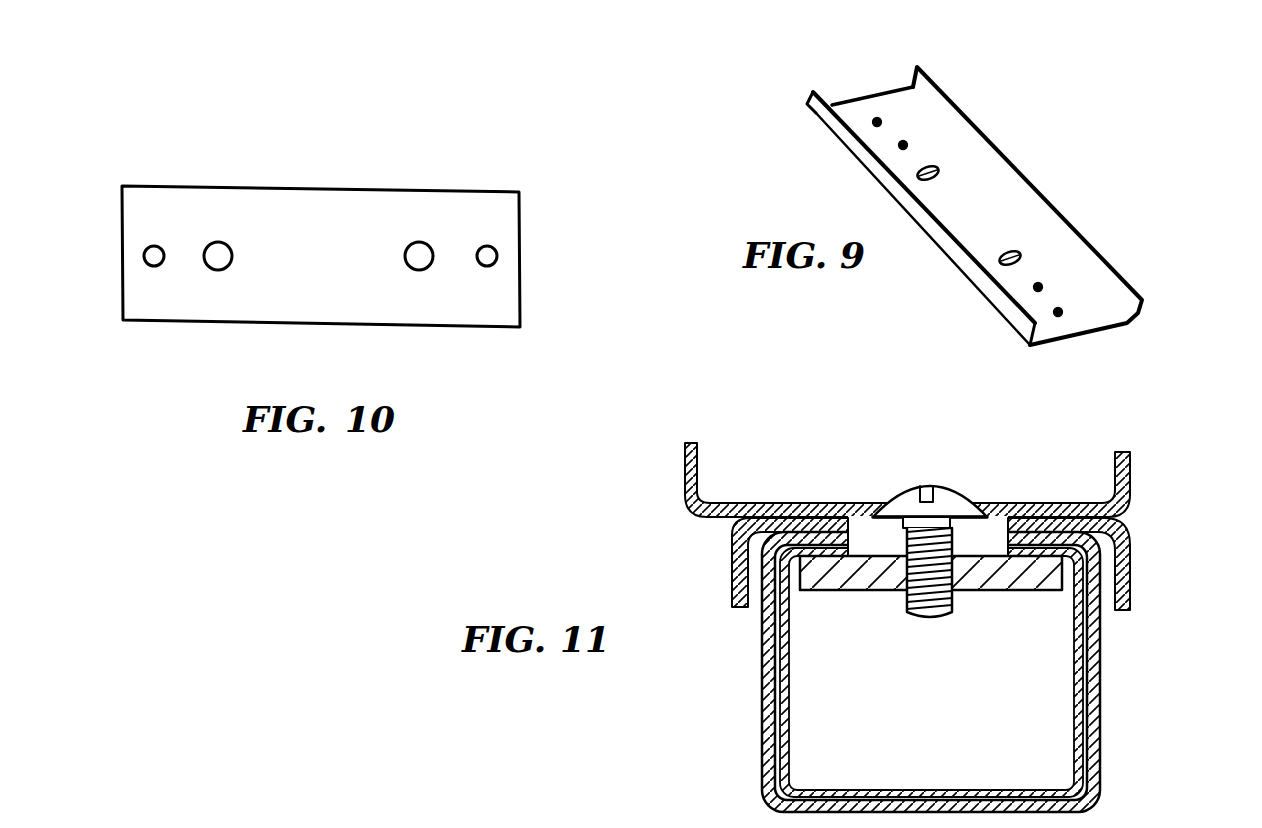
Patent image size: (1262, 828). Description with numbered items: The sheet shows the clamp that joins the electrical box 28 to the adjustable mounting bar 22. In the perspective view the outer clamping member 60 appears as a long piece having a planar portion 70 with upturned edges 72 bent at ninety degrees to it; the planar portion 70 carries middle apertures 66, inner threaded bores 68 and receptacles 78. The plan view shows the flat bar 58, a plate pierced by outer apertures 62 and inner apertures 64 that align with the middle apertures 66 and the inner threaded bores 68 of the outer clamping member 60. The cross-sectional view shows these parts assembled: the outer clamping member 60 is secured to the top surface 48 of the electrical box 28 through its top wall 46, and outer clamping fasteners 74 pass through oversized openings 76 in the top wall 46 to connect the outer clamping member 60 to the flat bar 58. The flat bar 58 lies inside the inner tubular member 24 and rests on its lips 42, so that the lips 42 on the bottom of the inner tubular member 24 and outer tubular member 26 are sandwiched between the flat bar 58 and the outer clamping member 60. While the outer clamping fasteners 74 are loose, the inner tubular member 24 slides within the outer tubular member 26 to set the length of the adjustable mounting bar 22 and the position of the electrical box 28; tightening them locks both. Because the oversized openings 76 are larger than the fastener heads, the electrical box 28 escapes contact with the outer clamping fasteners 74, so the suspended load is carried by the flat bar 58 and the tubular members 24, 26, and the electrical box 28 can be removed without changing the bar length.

In FIG. 11, the adjustable mounting bar 22 is at (954, 602).
In FIG. 11, the inner tubular member 24 is at (790, 712).
In FIG. 11, the outer tubular member 26 is at (765, 665).
In FIG. 11, the electrical box 28 is at (1132, 463).
In FIG. 11, the lips 42 is at (1048, 592).
In FIG. 11, the top wall 46 is at (722, 503).
In FIG. 11, the top surface 48 is at (727, 522).
In FIG. 10, the flat bar 58 is at (305, 153).
In FIG. 11, the flat bar 58 is at (1012, 592).
In FIG. 9, the outer clamping member 60 is at (982, 197).
In FIG. 11, the outer clamping member 60 is at (1130, 572).
In FIG. 10, the outer apertures 62 is at (152, 245).
In FIG. 10, the inner apertures 64 is at (221, 240).
In FIG. 9, the middle apertures 66 is at (905, 141).
In FIG. 9, the inner threaded bores 68 is at (934, 168).
In FIG. 9, the planar portion 70 is at (972, 221).
In FIG. 9, the upturned edges 72 is at (830, 125).
In FIG. 11, the outer clamping fasteners 74 is at (941, 487).
In FIG. 11, the oversized openings 76 is at (867, 505).
In FIG. 9, the receptacles 78 is at (878, 118).